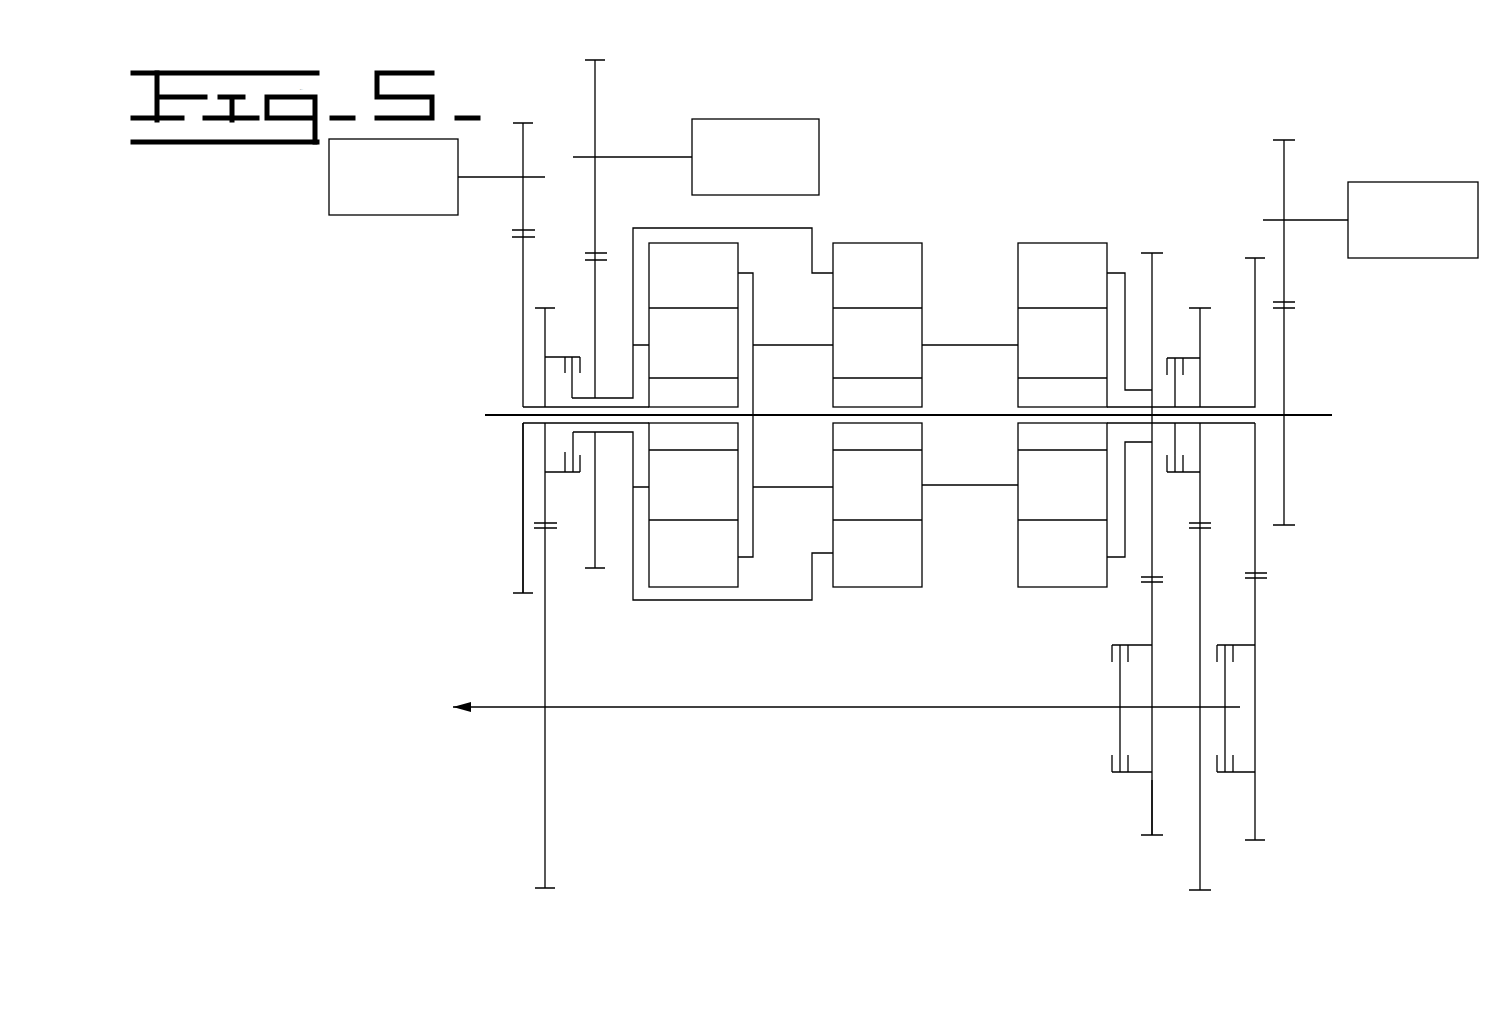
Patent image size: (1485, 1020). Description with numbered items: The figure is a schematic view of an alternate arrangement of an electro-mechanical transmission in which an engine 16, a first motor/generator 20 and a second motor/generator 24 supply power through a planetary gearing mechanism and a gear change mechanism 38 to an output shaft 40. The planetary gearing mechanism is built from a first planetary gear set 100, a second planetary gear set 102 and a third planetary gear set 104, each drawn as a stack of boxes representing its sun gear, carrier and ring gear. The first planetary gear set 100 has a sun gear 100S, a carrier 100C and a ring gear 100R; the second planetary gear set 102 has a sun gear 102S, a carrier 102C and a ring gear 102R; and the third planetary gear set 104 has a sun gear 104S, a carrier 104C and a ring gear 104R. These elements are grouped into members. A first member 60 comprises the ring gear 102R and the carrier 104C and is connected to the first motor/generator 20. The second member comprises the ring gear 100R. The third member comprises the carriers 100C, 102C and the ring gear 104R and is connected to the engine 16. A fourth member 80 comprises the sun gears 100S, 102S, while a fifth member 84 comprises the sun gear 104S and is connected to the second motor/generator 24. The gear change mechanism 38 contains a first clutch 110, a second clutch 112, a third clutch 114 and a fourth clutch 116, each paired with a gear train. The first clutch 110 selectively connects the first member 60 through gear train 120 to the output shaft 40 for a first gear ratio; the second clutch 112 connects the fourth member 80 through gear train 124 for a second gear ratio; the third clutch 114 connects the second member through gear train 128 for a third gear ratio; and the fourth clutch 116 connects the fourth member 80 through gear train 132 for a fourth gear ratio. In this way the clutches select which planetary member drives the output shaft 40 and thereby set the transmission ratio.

The engine 16 is at (1380, 182).
The first motor/generator 20 is at (762, 119).
The second motor/generator 24 is at (410, 215).
The gear change mechanism 38 is at (862, 758).
The output shaft 40 is at (812, 708).
The first member 60 is at (613, 398).
The fourth member 80 is at (1248, 407).
The fifth member 84 is at (530, 428).
The first planetary gear set 100 is at (1040, 465).
The sun gear of first planetary gear set 100S is at (1018, 385).
The carrier of first planetary gear set 100C is at (1018, 487).
The ring gear of first planetary gear set 100R is at (1018, 575).
The second planetary gear set 102 is at (916, 465).
The sun gear of second planetary gear set 102S is at (922, 385).
The carrier of second planetary gear set 102C is at (922, 475).
The ring gear of second planetary gear set 102R is at (922, 577).
The third planetary gear set 104 is at (730, 465).
The sun gear of third planetary gear set 104S is at (738, 395).
The carrier of third planetary gear set 104C is at (740, 472).
The ring gear of third planetary gear set 104R is at (738, 576).
The first clutch 110 is at (573, 472).
The second clutch 112 is at (1172, 472).
The third clutch 114 is at (1120, 772).
The fourth clutch 116 is at (1222, 772).
The gear train 120 is at (529, 608).
The gear train 124 is at (1187, 545).
The gear train 128 is at (1133, 818).
The gear train 132 is at (1258, 792).